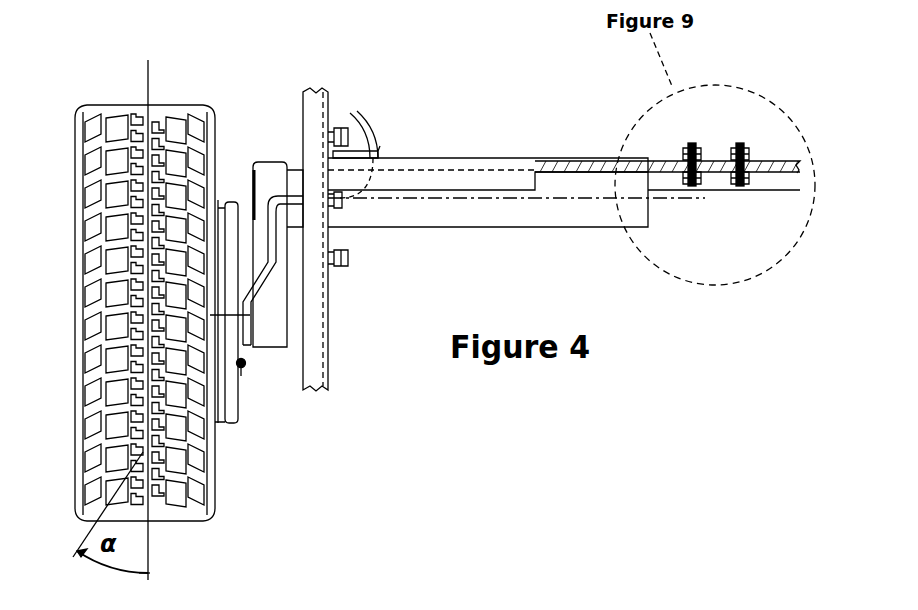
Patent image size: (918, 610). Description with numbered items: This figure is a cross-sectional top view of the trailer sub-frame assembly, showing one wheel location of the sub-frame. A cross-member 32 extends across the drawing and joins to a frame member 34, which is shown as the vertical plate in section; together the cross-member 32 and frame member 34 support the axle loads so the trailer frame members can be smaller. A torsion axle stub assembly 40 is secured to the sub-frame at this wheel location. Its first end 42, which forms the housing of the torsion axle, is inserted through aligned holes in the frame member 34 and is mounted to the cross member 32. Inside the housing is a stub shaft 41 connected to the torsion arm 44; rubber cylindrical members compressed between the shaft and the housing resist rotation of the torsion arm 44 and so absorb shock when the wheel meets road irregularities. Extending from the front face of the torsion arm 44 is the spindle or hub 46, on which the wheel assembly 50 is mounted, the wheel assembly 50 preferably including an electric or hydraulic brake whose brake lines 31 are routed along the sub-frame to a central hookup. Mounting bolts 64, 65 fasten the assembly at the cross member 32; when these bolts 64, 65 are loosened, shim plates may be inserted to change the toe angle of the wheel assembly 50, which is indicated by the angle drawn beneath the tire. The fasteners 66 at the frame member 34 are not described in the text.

The electrical/hydraulic brake lines 31 is at (374, 138).
The cross-member 32 is at (478, 176).
The frame member 34 is at (322, 297).
The torsion axle stub assembly 40 is at (266, 156).
The stub shaft 41 is at (253, 197).
The first end (housing) of axle stub assembly 42 is at (540, 216).
The torsion arm 44 is at (272, 328).
The spindle (hub) 46 is at (248, 345).
The wheel assembly 50 is at (73, 182).
The mounting bolt 64 is at (740, 143).
The mounting bolt 65 is at (692, 146).
The bolt 66 is at (353, 126).